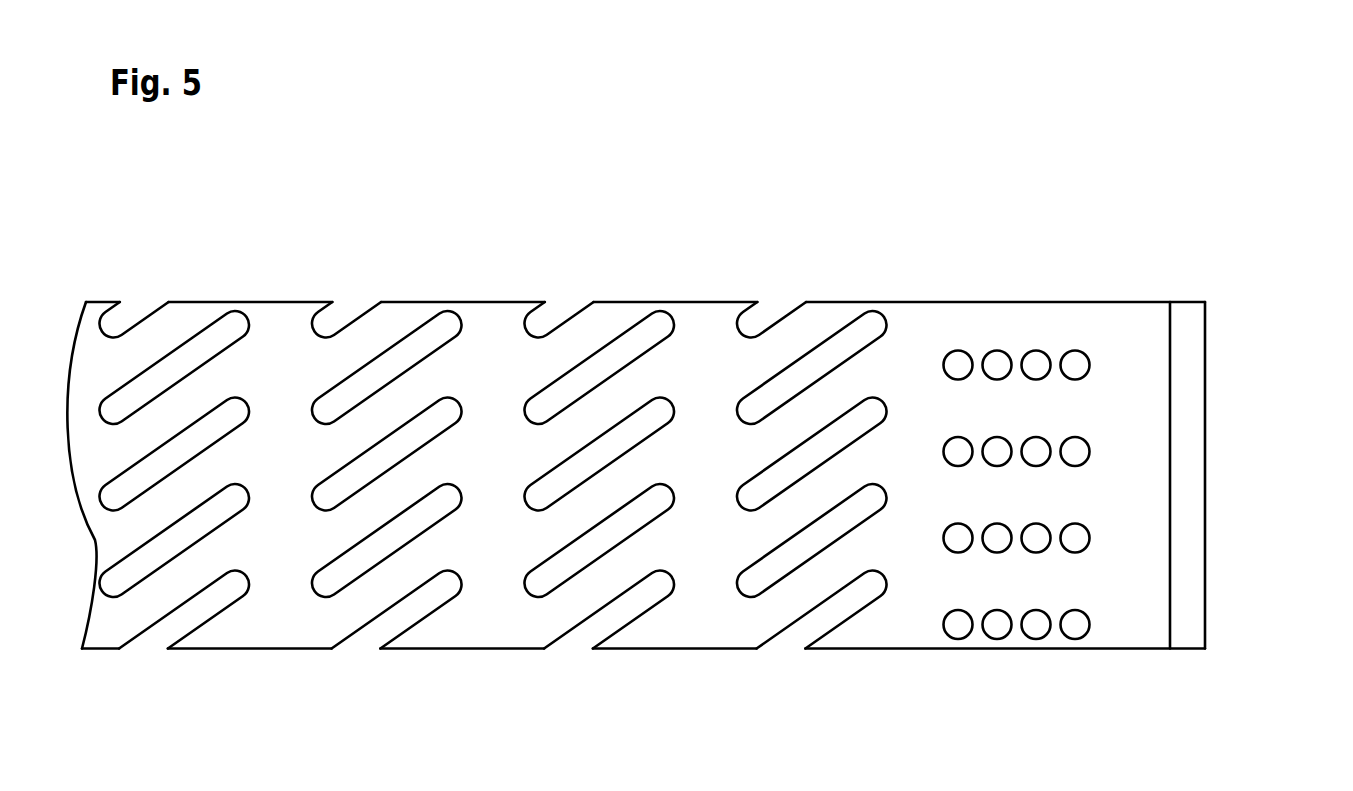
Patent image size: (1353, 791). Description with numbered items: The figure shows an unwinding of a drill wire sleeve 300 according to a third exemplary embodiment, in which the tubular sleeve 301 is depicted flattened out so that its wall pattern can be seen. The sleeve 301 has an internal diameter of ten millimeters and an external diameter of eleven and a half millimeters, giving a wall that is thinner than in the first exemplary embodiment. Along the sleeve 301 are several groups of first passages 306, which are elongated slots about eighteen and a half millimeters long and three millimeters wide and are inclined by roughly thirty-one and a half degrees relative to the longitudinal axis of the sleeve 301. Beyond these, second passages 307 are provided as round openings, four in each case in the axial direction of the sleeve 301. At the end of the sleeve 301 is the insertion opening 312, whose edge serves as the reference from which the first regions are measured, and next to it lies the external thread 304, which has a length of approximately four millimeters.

The spring strip element 300 is at (1174, 246).
The sleeve 301 is at (699, 620).
The external thread 304 is at (1188, 552).
The first passages 306 is at (818, 365).
The second passages 307 is at (996, 363).
The insertion opening 312 is at (1229, 415).